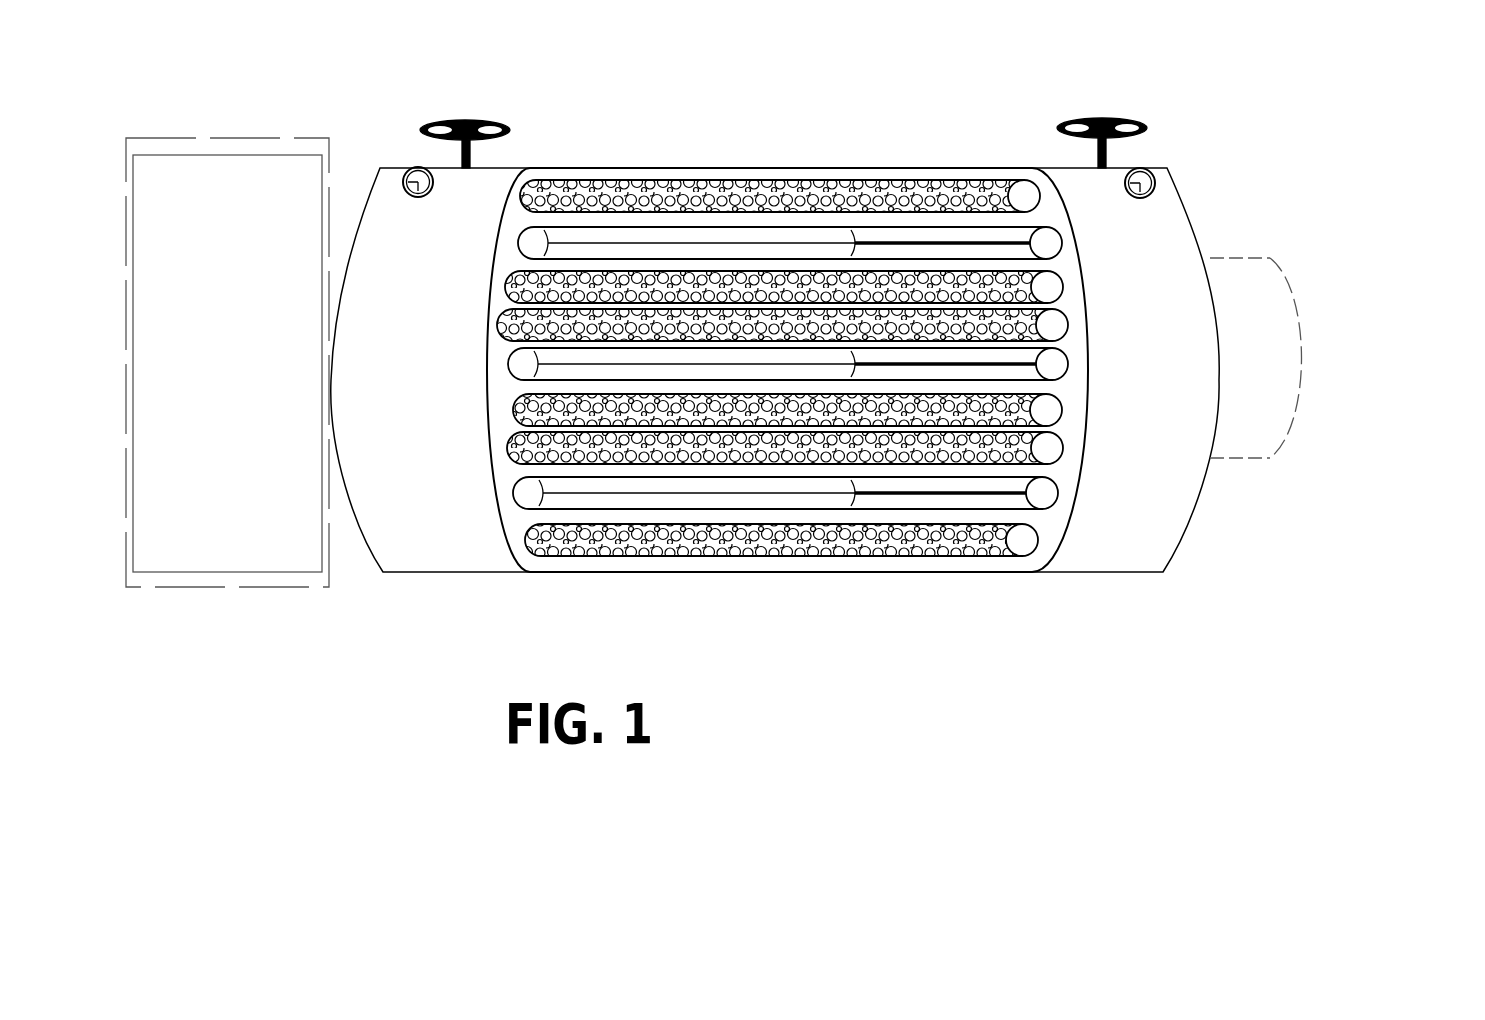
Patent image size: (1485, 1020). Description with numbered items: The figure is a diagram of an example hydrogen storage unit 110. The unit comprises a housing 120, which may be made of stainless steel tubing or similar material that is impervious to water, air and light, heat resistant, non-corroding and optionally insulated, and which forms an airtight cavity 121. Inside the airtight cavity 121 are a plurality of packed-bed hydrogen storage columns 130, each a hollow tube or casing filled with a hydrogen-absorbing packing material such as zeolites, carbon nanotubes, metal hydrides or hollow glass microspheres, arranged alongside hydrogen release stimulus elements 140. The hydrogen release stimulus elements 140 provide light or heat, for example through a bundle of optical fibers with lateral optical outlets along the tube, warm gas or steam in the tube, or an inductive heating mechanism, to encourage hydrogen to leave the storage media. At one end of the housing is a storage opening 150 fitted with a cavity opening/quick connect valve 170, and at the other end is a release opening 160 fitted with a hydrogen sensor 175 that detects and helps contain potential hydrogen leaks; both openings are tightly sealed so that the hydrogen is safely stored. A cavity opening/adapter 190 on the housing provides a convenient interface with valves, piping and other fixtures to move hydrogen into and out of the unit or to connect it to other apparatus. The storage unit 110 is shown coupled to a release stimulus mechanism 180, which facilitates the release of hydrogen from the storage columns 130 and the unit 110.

The hydrogen storage unit 110 is at (940, 19).
The housing 120 is at (770, 572).
The airtight cavity 121 is at (957, 568).
The packed-bed hydrogen storage column 130 is at (916, 180).
The hydrogen release stimulus element 140 is at (666, 180).
The storage opening 150 is at (410, 538).
The release opening 160 is at (1151, 609).
The cavity opening/quick connect valve 170 is at (456, 126).
The hydrogen sensor 175 is at (1197, 138).
The release stimulus mechanism 180 is at (218, 330).
The cavity opening/adapter 190 is at (1283, 322).